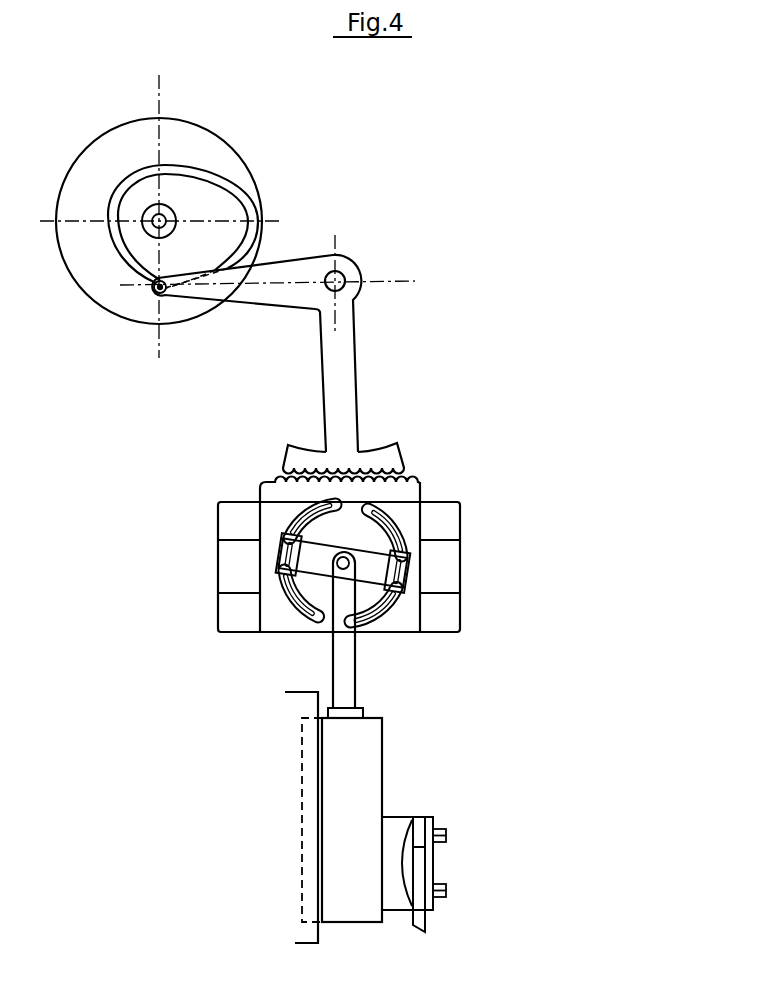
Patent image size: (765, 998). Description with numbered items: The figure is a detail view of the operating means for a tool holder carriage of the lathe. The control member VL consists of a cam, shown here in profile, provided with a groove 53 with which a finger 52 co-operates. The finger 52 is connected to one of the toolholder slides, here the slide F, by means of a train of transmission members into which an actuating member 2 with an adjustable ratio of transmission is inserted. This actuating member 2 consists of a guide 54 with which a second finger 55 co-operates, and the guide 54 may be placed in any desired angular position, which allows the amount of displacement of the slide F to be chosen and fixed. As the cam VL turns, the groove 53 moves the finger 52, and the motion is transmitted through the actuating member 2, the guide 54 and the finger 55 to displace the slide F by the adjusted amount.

The control member VL is at (231, 158).
The groove 53 is at (237, 206).
The finger 52 is at (154, 293).
The actuating member 2 is at (280, 511).
The guide 54 is at (313, 557).
The finger 55 is at (345, 556).
The toolholder slide F is at (365, 817).